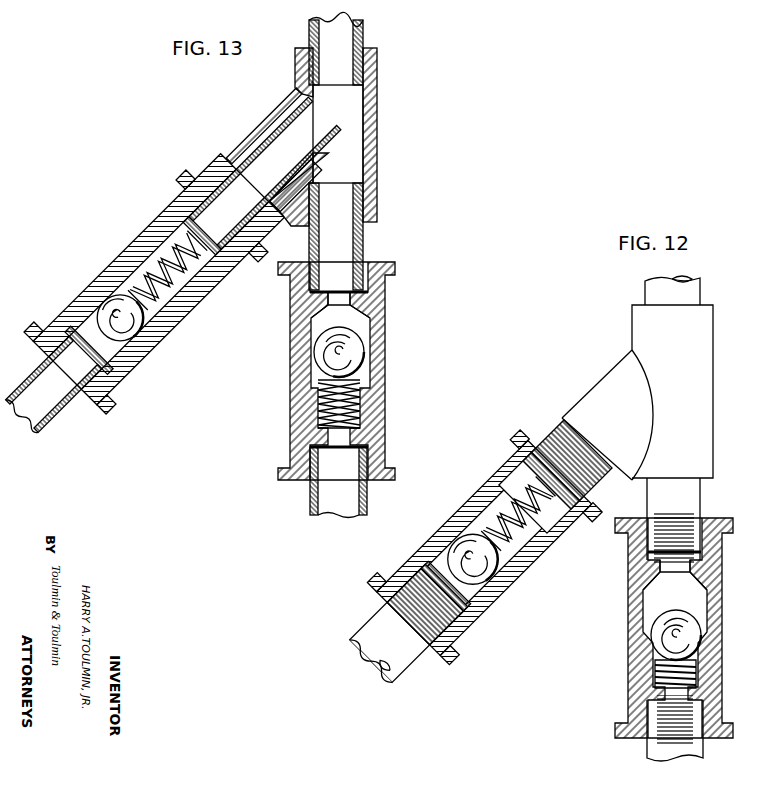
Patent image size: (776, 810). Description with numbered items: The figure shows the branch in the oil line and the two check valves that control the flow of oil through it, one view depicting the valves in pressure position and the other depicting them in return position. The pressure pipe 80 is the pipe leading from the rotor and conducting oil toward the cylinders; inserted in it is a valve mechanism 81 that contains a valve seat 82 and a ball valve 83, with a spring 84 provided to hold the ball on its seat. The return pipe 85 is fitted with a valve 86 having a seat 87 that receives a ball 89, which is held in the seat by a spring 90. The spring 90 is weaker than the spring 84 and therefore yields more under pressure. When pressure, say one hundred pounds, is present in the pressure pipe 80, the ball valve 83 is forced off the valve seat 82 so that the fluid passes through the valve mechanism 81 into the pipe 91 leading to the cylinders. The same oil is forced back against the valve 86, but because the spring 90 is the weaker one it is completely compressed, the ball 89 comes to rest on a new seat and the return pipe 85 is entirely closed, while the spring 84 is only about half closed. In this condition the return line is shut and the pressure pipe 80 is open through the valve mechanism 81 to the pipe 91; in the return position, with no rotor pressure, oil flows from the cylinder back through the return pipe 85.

In FIG. 13, the pressure pipe 80 is at (220, 177).
In FIG. 12, the pressure pipe 80 is at (557, 440).
In FIG. 13, the valve mechanism 81 is at (203, 305).
In FIG. 12, the valve mechanism 81 is at (506, 591).
In FIG. 13, the valve seat 82 is at (130, 345).
In FIG. 12, the valve seat 82 is at (472, 613).
In FIG. 13, the ball valve 83 is at (107, 303).
In FIG. 12, the ball valve 83 is at (468, 542).
In FIG. 13, the spring 84 is at (133, 282).
In FIG. 12, the spring 84 is at (492, 520).
In FIG. 13, the return pipe 85 is at (372, 242).
In FIG. 12, the return pipe 85 is at (703, 492).
In FIG. 13, the valve 86 is at (386, 345).
In FIG. 12, the valve 86 is at (626, 602).
In FIG. 13, the seat 87 is at (370, 315).
In FIG. 12, the seat 87 is at (658, 572).
In FIG. 13, the ball 89 is at (314, 363).
In FIG. 12, the ball 89 is at (655, 630).
In FIG. 13, the spring 90 is at (322, 404).
In FIG. 12, the spring 90 is at (657, 673).
In FIG. 13, the pipe 91 is at (366, 32).
In FIG. 12, the pipe 91 is at (700, 288).